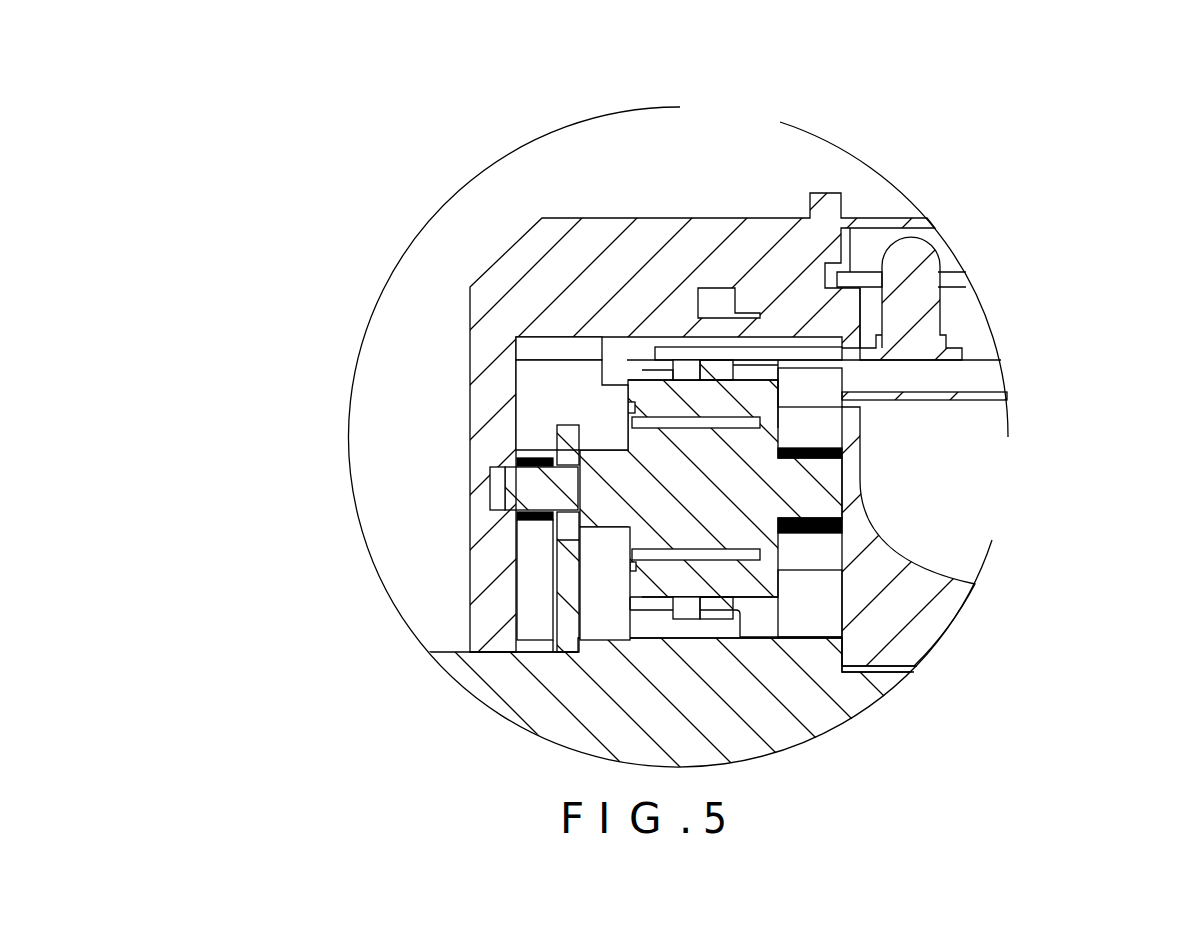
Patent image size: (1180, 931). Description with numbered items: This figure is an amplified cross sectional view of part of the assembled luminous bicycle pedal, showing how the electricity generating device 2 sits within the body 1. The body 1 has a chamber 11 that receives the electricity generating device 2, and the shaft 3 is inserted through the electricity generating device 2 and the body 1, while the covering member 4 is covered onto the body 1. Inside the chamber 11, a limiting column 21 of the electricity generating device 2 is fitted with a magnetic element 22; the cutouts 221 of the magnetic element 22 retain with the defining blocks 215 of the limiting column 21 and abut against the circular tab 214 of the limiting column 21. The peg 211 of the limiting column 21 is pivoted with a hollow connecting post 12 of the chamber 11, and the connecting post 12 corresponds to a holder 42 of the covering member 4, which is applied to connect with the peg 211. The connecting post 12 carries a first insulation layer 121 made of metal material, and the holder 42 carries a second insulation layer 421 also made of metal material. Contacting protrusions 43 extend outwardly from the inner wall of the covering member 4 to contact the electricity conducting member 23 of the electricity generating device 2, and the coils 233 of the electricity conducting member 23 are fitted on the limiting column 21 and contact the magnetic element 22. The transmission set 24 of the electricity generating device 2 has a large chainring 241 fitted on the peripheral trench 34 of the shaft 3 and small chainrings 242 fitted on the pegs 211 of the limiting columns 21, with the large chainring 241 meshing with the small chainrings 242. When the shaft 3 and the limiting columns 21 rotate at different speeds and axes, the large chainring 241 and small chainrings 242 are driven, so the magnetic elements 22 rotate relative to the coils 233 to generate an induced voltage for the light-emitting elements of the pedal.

The body 1 is at (1007, 297).
The electricity generating device 2 is at (605, 552).
The shaft 3 is at (541, 723).
The covering member 4 is at (456, 244).
The chamber 11 is at (970, 560).
The connecting post 12 is at (828, 487).
The limiting column 21 is at (862, 517).
The magnetic element 22 is at (678, 324).
The electricity conducting member 23 is at (628, 382).
The transmission set 24 is at (400, 594).
The peripheral trench 34 is at (400, 594).
The holder 42 is at (510, 490).
The contacting protrusion 43 is at (651, 393).
The first insulation layer 121 is at (842, 450).
The peg 211 is at (970, 560).
The circular tab 214 is at (780, 418).
The defining block 215 is at (965, 432).
The cutout 221 is at (842, 432).
The coil 233 is at (692, 420).
The large chainring 241 is at (563, 605).
The small chainring 242 is at (570, 443).
The second insulation layer 421 is at (517, 453).